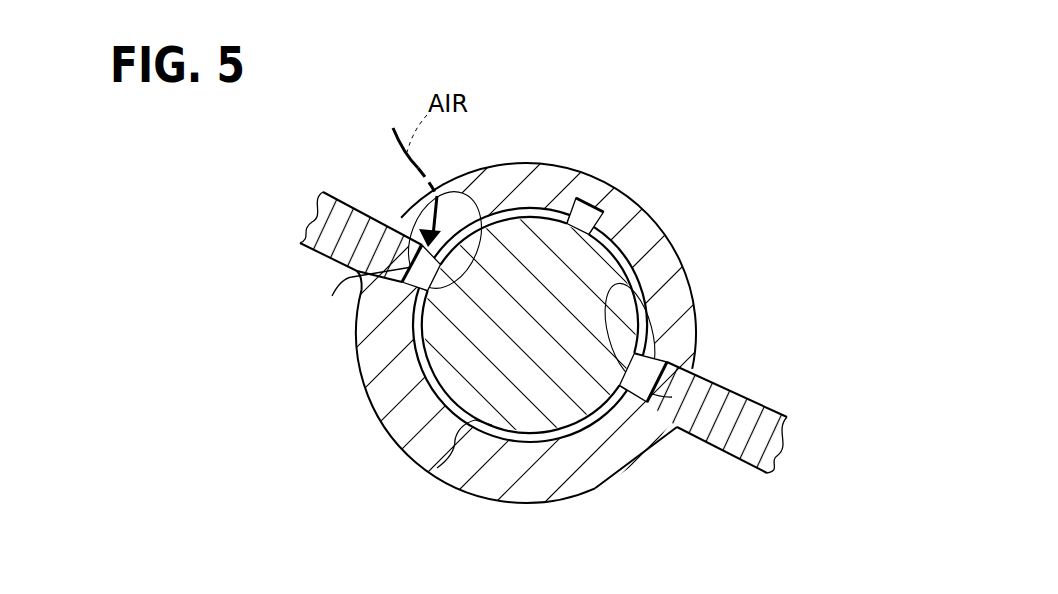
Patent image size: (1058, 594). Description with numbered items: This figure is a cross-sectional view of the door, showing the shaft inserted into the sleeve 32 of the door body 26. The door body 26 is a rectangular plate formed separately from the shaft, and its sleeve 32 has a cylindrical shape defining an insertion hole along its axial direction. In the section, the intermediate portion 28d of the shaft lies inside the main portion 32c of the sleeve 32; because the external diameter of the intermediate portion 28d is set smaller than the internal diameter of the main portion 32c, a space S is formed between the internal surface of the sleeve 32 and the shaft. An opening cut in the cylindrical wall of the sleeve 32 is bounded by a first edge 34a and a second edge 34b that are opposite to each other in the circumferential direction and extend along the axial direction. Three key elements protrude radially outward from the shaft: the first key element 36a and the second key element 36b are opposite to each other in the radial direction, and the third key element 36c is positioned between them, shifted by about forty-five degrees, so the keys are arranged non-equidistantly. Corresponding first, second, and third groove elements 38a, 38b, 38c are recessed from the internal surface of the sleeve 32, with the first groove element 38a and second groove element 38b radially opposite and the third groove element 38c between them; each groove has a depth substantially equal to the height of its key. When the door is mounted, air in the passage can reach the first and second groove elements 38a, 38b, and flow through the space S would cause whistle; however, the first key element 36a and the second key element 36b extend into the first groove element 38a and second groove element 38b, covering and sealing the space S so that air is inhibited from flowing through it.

The door body 26 is at (342, 218).
The intermediate portion 28d is at (607, 290).
The sleeve 32 is at (518, 186).
The main portion 32c is at (492, 457).
The first edge 34a is at (477, 253).
The second edge 34b is at (648, 298).
The first key element 36a is at (405, 266).
The second key element 36b is at (673, 397).
The third key element 36c is at (606, 206).
The first groove element 38a is at (402, 282).
The second groove element 38b is at (643, 327).
The third groove element 38c is at (571, 202).
The space S is at (437, 468).